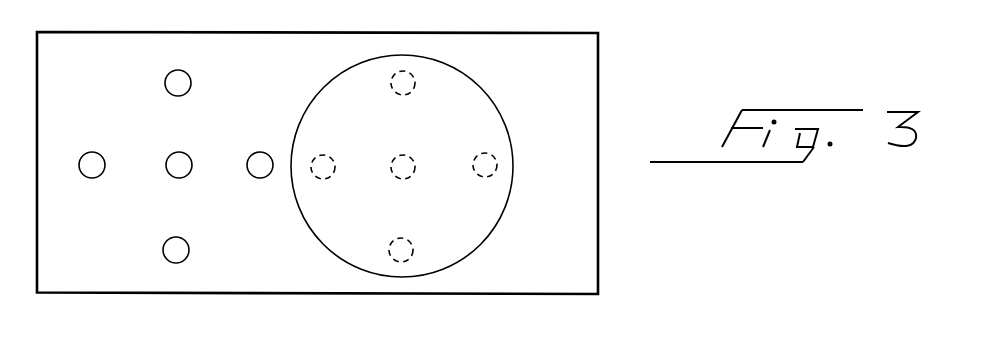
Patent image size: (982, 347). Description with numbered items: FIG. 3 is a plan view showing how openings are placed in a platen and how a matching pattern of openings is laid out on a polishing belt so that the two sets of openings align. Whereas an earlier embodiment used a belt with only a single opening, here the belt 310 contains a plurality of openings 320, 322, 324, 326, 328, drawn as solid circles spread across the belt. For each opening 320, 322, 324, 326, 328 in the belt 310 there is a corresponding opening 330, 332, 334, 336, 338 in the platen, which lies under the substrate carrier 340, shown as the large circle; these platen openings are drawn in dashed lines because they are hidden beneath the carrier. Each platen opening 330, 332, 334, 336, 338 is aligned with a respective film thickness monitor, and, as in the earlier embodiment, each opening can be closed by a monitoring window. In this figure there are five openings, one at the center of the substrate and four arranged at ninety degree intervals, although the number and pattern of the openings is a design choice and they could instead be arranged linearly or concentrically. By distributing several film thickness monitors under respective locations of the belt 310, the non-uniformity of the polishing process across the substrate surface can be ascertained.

The belt 310 is at (568, 258).
The opening 320 is at (188, 73).
The opening 322 is at (261, 152).
The opening 324 is at (164, 257).
The opening 326 is at (93, 152).
The opening 328 is at (182, 135).
The opening 330 is at (400, 88).
The opening 332 is at (490, 154).
The opening 334 is at (397, 239).
The opening 336 is at (340, 133).
The opening 338 is at (409, 155).
The substrate carrier 340 is at (490, 90).